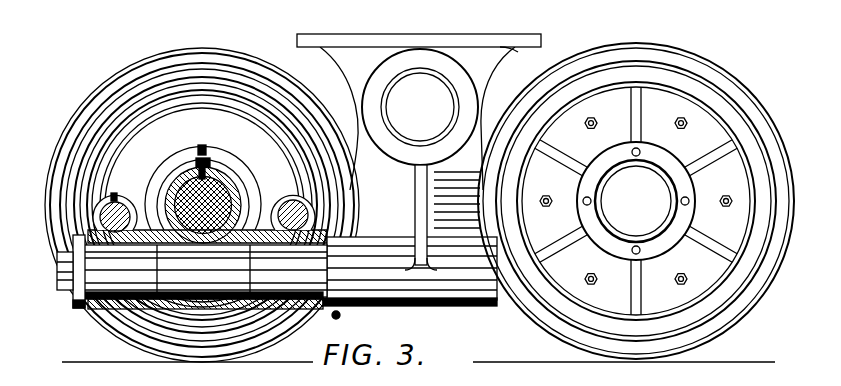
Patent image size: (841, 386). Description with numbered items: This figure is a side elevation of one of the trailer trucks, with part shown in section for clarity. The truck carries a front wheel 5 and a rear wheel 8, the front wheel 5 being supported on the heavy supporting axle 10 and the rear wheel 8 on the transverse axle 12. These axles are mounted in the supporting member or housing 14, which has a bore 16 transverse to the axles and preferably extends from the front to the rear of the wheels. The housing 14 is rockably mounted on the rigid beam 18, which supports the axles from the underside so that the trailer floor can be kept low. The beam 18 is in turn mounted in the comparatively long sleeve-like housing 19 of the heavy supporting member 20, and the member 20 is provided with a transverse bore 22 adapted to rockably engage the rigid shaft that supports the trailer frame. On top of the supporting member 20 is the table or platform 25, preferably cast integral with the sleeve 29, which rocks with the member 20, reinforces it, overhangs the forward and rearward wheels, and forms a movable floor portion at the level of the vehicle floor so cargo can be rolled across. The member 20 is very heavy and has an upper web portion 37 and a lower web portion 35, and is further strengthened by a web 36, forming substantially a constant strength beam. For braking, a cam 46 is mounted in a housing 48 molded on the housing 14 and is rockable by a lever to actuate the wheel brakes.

The front wheel 5 is at (95, 318).
The rear wheel 8 is at (740, 310).
The supporting axle 10 is at (180, 182).
The transverse axle 12 is at (636, 201).
The supporting member or housing 14 is at (172, 168).
The bore 16 is at (125, 337).
The rigid beam 18 is at (73, 288).
The sleeve-like housing 19 is at (355, 310).
The supporting member 20 is at (487, 118).
The transverse bore 22 is at (420, 107).
The table or platform 25 is at (368, 36).
The sleeve 29 is at (368, 90).
The lower web portion 35 is at (348, 200).
The web 36 is at (415, 215).
The upper web portion 37 is at (512, 50).
The cam 46 is at (100, 225).
The housing 48 is at (103, 210).